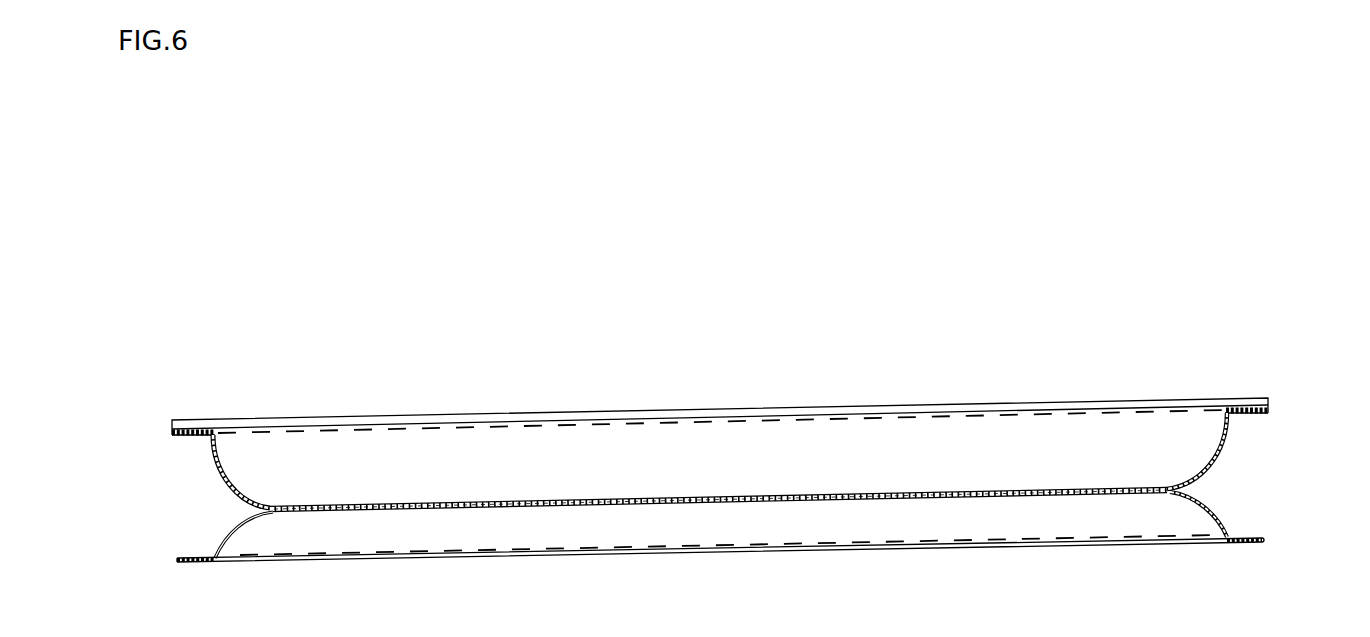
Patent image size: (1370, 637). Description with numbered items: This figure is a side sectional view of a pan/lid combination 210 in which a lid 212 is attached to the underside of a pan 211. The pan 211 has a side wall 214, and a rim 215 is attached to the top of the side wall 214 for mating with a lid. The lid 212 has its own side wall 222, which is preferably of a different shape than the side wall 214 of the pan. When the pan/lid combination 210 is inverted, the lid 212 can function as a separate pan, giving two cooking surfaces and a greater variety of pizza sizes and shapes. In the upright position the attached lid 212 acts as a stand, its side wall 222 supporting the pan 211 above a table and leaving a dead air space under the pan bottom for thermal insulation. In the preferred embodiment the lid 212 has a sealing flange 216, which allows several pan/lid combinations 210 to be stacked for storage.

The pan/lid combination 210 is at (225, 510).
The pan 211 is at (1229, 448).
The lid 212 is at (1220, 514).
The side wall 214 is at (220, 477).
The rim 215 is at (168, 430).
The sealing flange 216 is at (191, 564).
The side wall 222 is at (215, 550).